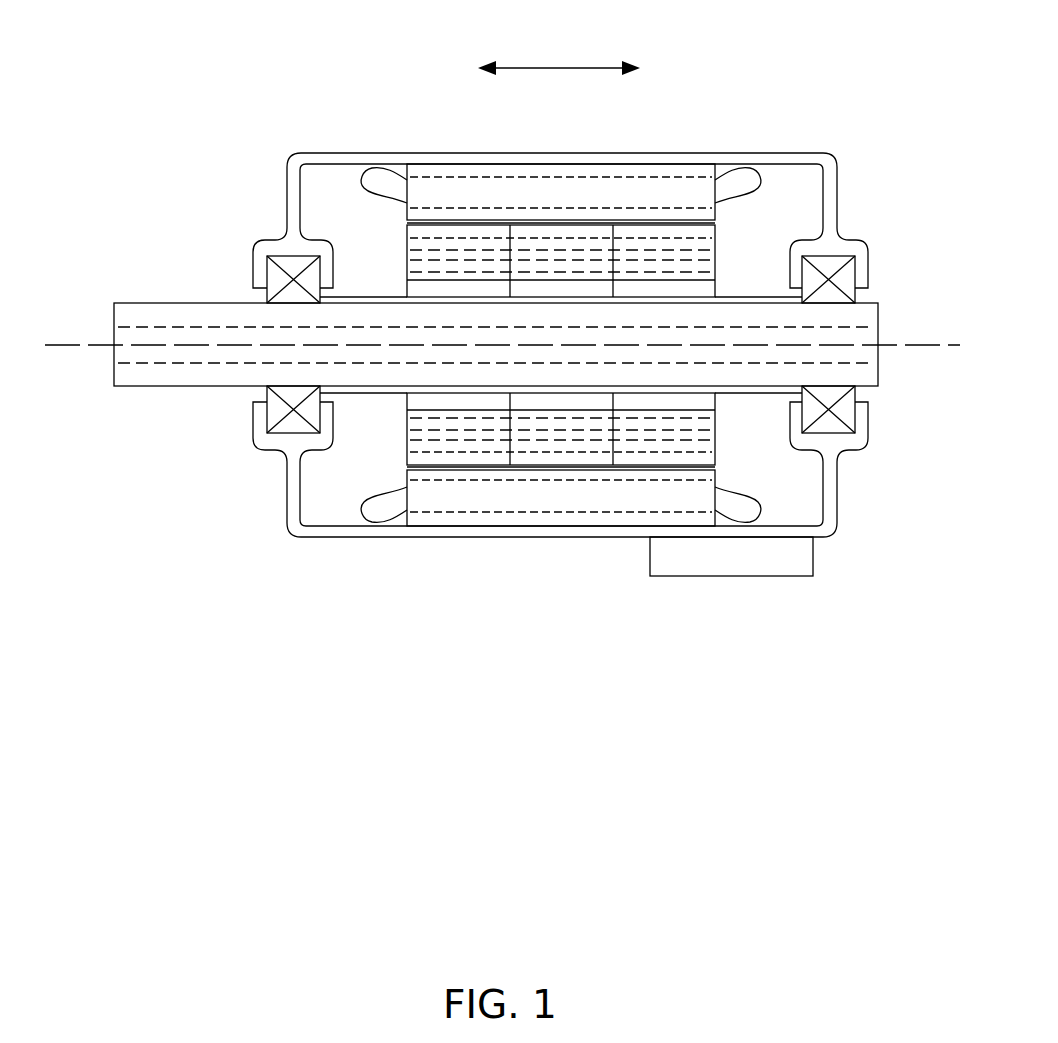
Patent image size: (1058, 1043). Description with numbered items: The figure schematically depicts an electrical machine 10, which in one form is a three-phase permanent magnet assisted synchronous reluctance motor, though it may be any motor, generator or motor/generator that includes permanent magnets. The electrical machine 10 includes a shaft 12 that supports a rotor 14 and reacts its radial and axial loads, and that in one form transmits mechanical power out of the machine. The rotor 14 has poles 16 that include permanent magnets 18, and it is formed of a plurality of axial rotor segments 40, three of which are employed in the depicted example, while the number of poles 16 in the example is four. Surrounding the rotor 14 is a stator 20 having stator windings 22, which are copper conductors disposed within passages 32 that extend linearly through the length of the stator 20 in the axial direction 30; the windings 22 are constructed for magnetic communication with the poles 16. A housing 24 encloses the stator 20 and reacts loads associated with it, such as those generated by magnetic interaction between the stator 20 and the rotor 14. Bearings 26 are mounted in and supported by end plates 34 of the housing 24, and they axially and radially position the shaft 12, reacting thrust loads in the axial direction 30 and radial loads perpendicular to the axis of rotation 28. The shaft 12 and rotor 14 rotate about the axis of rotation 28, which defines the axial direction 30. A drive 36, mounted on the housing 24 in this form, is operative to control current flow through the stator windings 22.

The electrical machine 10 is at (186, 95).
The shaft 12 is at (137, 303).
The rotor 14 is at (367, 428).
The poles 16 is at (715, 228).
The permanent magnets 18 is at (480, 268).
The stator 20 is at (407, 212).
The stator windings 22 is at (760, 172).
The housing 24 is at (568, 153).
The bearings 26 is at (267, 296).
The axis of rotation 28 is at (65, 346).
The axial direction 30 is at (568, 66).
The passages 32 is at (468, 512).
The end plates 34 is at (287, 500).
The drive 36 is at (762, 578).
The axial rotor segment 40 is at (422, 456).